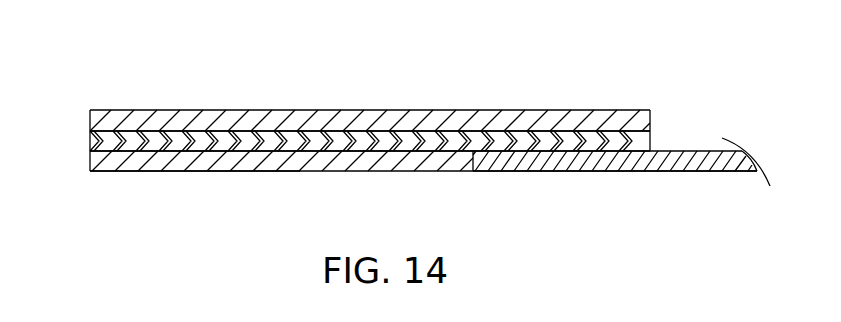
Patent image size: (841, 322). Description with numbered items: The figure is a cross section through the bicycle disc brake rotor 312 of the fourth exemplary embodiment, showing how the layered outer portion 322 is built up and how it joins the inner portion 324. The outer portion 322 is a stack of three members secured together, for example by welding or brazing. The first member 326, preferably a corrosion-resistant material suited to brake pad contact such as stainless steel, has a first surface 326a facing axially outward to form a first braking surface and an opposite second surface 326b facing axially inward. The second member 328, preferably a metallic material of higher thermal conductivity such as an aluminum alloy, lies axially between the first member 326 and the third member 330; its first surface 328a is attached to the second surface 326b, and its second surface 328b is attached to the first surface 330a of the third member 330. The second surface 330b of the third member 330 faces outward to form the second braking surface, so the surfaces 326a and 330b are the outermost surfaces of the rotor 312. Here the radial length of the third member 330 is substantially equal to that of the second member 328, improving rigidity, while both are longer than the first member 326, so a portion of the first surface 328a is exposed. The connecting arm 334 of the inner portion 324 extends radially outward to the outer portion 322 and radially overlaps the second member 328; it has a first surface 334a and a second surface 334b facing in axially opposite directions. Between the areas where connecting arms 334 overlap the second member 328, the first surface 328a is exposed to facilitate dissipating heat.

The bicycle disc brake rotor 312 is at (128, 60).
The outer portion 322 is at (138, 173).
The inner portion 324 is at (571, 173).
The first member 326 is at (90, 161).
The first surface of the first member 326a is at (200, 172).
The second surface of the first member 326b is at (195, 151).
The second member 328 is at (90, 141).
The first surface of the second member 328a is at (502, 151).
The second surface of the second member 328b is at (562, 131).
The third member 330 is at (90, 122).
The first surface of the third member 330a is at (405, 131).
The second surface of the third member 330b is at (330, 110).
The connecting arm 334 is at (667, 172).
The first surface of the connecting arm 334a is at (731, 172).
The second surface of the connecting arm 334b is at (702, 151).